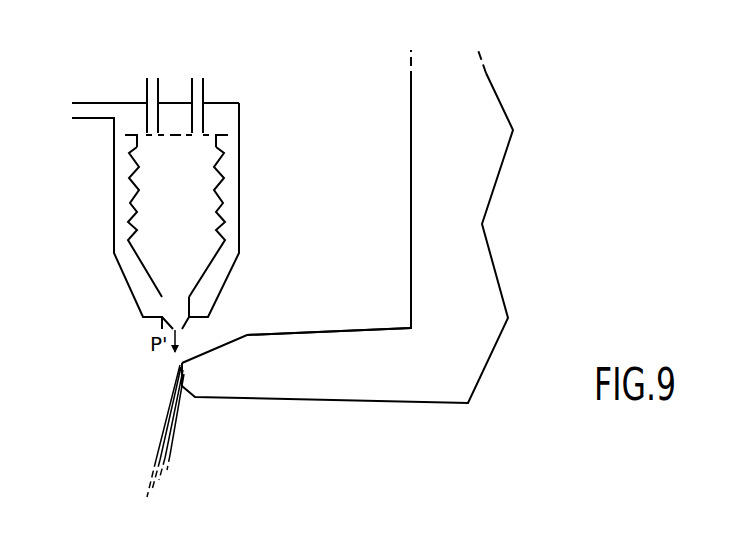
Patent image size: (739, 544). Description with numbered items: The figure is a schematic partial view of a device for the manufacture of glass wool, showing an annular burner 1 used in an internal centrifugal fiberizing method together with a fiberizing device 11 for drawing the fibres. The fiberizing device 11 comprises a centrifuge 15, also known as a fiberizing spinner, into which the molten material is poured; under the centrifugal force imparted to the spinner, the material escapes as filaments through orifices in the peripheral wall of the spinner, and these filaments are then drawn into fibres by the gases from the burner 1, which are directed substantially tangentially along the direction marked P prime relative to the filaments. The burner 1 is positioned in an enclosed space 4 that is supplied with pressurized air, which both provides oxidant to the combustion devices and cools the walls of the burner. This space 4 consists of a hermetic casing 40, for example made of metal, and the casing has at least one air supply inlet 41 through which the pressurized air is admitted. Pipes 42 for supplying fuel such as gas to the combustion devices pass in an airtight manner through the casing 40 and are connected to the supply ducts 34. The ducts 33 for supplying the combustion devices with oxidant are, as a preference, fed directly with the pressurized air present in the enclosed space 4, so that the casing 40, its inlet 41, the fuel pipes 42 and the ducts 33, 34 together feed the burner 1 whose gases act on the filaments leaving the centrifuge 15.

The burner 1 is at (224, 215).
The enclosed space 4 is at (123, 223).
The fiberizing device 11 is at (337, 458).
The centrifuge 15 is at (300, 348).
The ducts for supplying oxidant 33 is at (181, 130).
The supply ducts 34 is at (200, 135).
The hermetic casing 40 is at (240, 172).
The air supply inlet 41 is at (110, 110).
The pipes for supplying fuel 42 is at (148, 92).